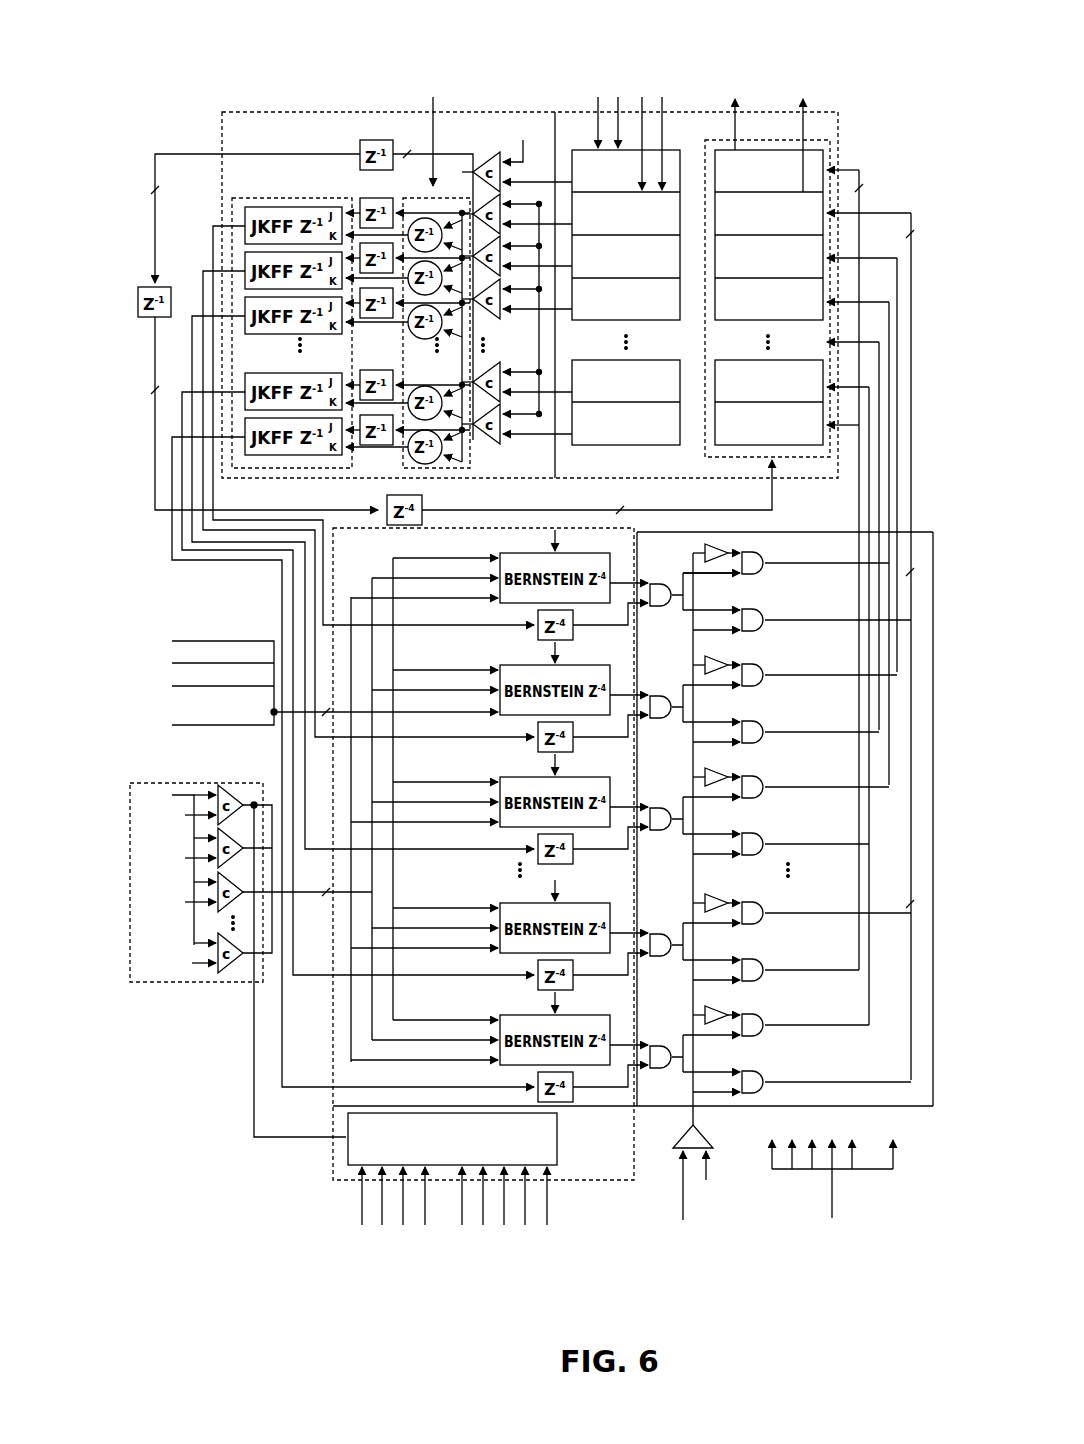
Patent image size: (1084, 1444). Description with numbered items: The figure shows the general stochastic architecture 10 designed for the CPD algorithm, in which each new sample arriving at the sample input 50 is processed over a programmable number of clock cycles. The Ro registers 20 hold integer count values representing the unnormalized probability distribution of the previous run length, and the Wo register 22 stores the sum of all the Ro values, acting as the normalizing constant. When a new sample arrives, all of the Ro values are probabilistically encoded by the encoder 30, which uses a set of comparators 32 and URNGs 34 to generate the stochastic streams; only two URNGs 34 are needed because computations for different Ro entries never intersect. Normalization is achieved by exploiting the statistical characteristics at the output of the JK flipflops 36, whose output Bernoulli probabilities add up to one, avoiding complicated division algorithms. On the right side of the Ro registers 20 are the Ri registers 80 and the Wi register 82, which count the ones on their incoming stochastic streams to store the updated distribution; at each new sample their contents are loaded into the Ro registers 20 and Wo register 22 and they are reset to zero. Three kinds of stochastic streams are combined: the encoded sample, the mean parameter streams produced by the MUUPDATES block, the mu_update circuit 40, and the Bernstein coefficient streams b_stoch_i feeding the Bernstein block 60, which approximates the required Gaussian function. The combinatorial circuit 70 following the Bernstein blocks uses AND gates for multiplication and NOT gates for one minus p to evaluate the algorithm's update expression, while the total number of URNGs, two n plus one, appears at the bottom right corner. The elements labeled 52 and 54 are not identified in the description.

The architecture 10 is at (183, 63).
The Ro registers 20 is at (694, 183).
The Wo register 22 is at (668, 130).
The encoder 30 is at (372, 111).
The comparators 32 is at (483, 128).
The URNGs 34 is at (543, 112).
The JK flipflop 36 is at (262, 184).
The mu_update circuit 40 is at (346, 1150).
The sample input 50 is at (188, 781).
The comparator unit 52 is at (226, 988).
The power inputs 54 is at (173, 945).
The Bernstein block 60 is at (332, 1022).
The combinatorial circuit 70 is at (735, 1108).
The Ri registers 80 is at (803, 468).
The Wi register 82 is at (814, 140).